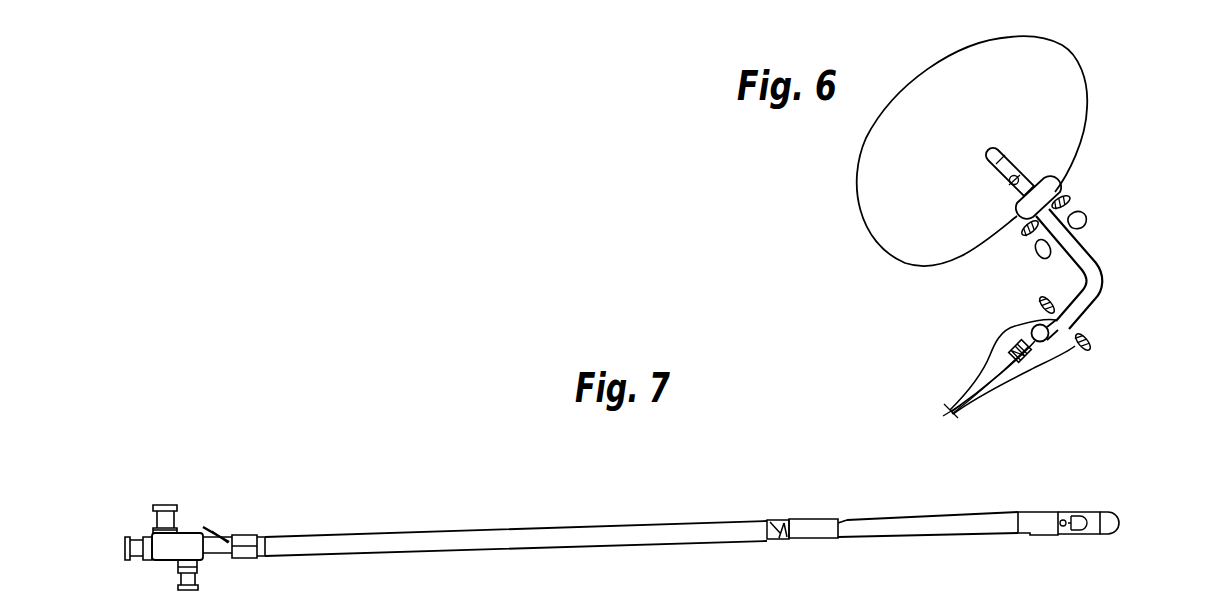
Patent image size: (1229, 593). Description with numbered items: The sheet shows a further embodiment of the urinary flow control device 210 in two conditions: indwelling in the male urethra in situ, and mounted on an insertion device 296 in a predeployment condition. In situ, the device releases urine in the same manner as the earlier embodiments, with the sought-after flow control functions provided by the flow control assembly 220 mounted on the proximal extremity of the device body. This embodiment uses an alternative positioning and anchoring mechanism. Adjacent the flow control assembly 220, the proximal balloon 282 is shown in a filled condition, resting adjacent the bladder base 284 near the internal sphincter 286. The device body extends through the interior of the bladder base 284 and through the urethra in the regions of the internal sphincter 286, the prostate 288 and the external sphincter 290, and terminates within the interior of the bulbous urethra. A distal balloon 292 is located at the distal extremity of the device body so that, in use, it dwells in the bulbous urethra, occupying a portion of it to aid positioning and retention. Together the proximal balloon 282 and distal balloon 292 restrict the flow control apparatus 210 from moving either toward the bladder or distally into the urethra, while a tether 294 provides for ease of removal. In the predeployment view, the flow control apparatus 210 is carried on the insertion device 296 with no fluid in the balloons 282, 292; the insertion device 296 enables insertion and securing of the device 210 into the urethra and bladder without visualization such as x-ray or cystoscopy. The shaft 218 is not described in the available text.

In FIG. 6, the urinary flow control device 210 is at (1128, 364).
In FIG. 7, the urinary flow control device 210 is at (905, 501).
In FIG. 6, the shaft 218 is at (1097, 268).
In FIG. 6, the flow control assembly 220 is at (1022, 174).
In FIG. 6, the proximal balloon 282 is at (1012, 209).
In FIG. 6, the bladder base 284 is at (1068, 192).
In FIG. 6, the internal sphincter 286 is at (1067, 198).
In FIG. 6, the prostate 288 is at (1036, 255).
In FIG. 6, the external sphincter 290 is at (1092, 341).
In FIG. 6, the distal balloon 292 is at (1047, 343).
In FIG. 6, the tether 294 is at (951, 413).
In FIG. 7, the insertion device 296 is at (435, 512).